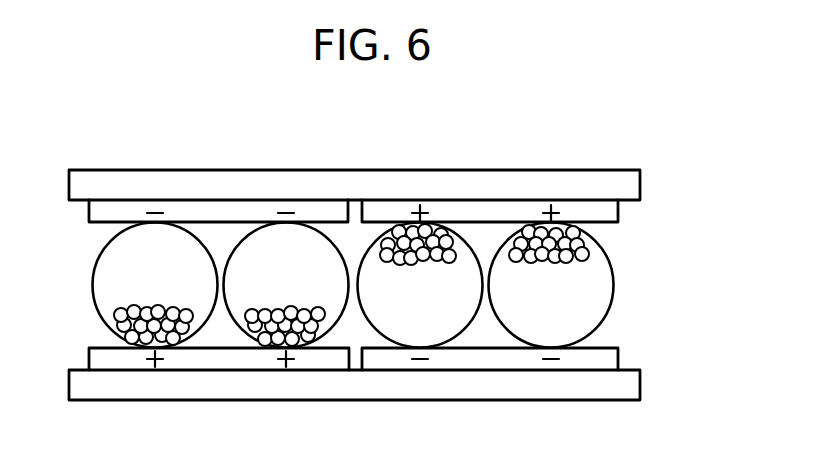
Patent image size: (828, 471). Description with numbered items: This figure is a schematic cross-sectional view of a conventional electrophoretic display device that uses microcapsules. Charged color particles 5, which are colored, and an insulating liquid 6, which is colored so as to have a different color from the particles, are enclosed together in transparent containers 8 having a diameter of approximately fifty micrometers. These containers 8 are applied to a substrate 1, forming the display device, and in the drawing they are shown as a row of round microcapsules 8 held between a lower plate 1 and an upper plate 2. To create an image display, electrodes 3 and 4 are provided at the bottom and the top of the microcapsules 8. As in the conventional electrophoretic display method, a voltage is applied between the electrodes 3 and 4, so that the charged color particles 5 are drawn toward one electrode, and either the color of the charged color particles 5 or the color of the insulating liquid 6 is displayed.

The substrate 1 is at (628, 390).
The upper substrate 2 is at (628, 188).
The electrode 3 is at (620, 360).
The electrode 4 is at (610, 215).
The charged color particles 5 is at (583, 265).
The insulating liquid 6 is at (593, 292).
The transparent container 8 is at (608, 316).